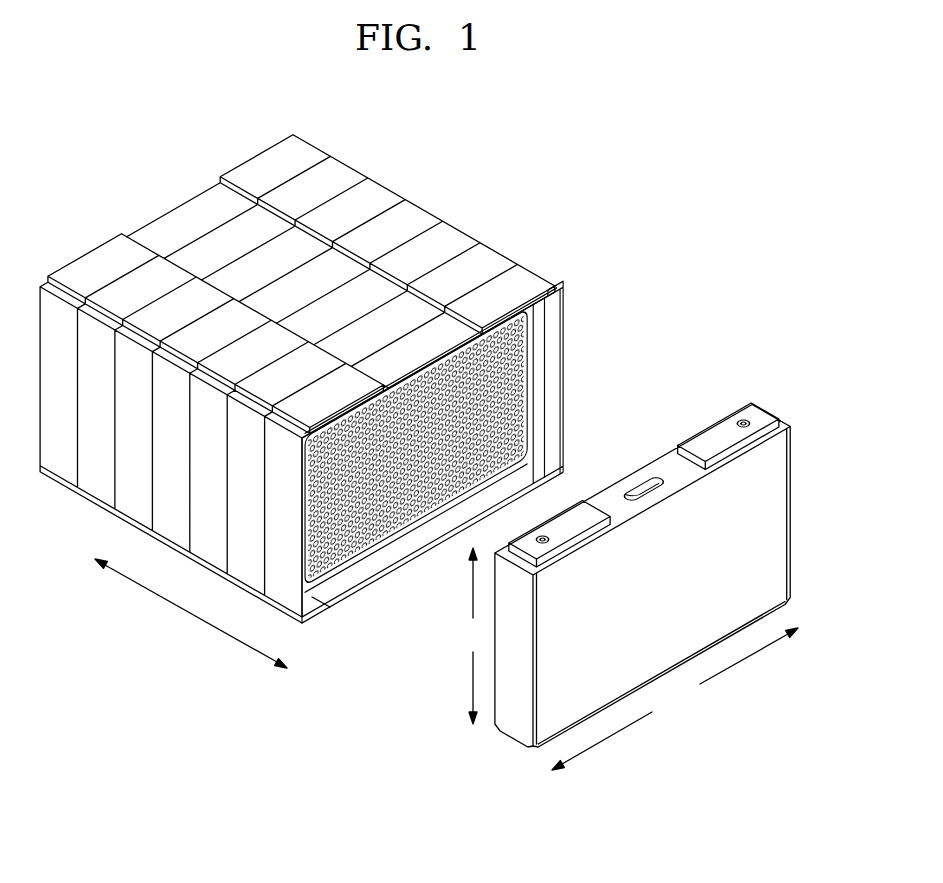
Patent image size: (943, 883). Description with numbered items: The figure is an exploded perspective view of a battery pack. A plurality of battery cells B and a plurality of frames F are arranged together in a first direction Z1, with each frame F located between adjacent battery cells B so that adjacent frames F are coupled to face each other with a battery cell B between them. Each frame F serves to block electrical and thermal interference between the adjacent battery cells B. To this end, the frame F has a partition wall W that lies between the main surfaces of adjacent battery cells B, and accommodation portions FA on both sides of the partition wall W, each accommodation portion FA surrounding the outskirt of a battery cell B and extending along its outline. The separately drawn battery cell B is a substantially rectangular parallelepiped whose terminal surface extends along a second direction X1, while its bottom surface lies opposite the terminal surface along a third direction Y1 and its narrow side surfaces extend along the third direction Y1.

The frame F is at (560, 281).
The accommodation portion FA is at (550, 418).
The partition wall W is at (362, 510).
The battery cell B is at (780, 413).
The second direction X1 is at (675, 699).
The third direction Y1 is at (470, 636).
The first direction Z1 is at (191, 613).